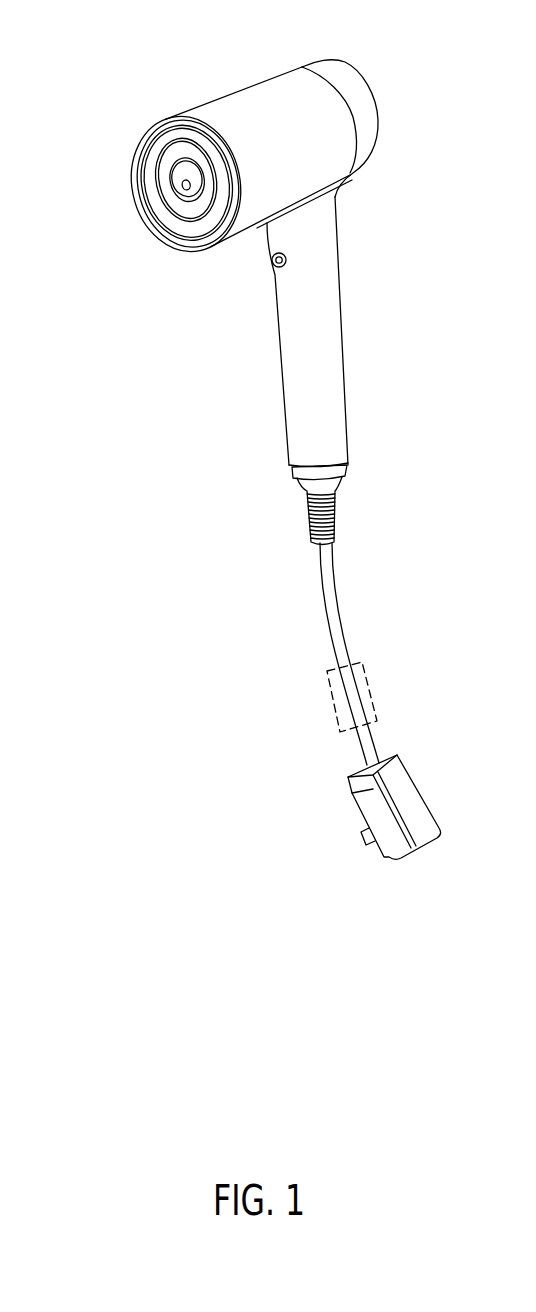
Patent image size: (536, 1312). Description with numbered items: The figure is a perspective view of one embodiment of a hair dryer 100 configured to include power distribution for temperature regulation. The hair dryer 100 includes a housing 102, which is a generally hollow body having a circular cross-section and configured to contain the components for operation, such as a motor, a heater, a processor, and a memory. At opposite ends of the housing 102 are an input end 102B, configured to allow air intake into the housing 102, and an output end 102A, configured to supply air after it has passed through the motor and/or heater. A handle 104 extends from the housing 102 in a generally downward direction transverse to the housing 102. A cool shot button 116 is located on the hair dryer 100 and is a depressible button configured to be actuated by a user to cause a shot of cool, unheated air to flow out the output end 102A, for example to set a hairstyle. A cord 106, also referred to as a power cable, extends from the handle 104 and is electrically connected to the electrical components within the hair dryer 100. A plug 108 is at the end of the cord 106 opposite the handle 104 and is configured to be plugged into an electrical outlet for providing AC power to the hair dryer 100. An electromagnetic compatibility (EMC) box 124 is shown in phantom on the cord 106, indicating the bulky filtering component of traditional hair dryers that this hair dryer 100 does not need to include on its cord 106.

The hair dryer 100 is at (55, 62).
The housing 102 is at (218, 98).
The output end 102A is at (108, 188).
The input end 102B is at (390, 98).
The handle 104 is at (281, 365).
The cord 106 is at (322, 598).
The plug 108 is at (361, 815).
The cool shot button 116 is at (274, 265).
The electromagnetic compatibility (EMC) box 124 is at (330, 689).